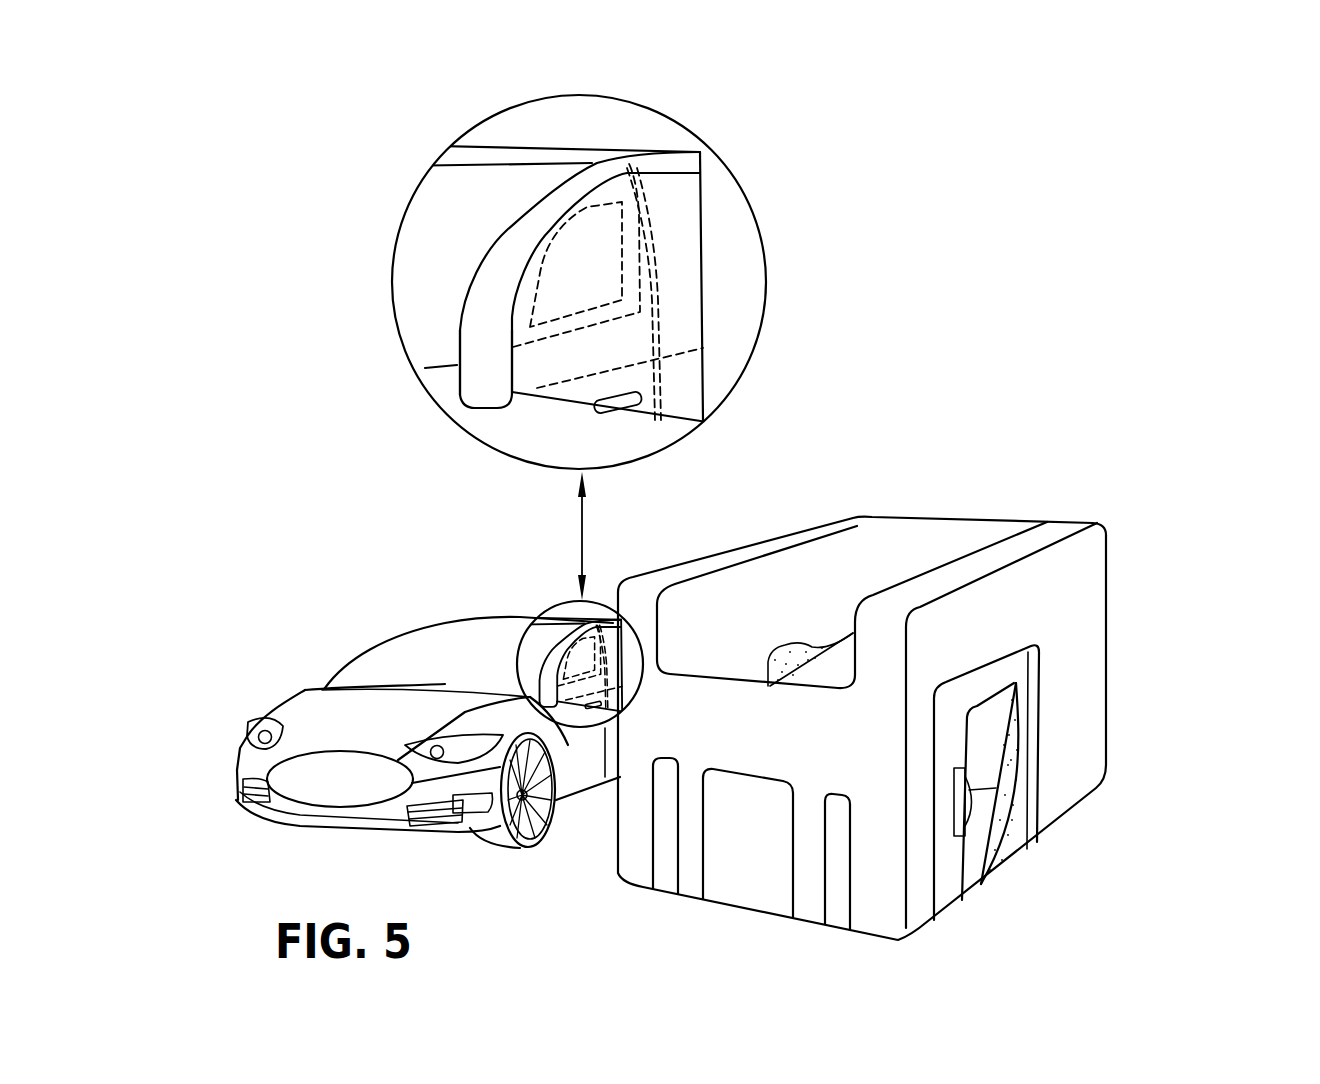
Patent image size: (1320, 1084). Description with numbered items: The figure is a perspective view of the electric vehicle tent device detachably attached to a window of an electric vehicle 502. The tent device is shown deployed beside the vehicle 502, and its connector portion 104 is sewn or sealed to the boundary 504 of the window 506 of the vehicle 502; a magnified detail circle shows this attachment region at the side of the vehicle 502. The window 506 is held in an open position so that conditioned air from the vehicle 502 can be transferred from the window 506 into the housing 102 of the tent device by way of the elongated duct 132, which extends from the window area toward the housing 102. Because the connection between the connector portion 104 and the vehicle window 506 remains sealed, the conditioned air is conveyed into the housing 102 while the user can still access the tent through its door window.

The housing 102 is at (1158, 691).
The connector portion 104 is at (565, 178).
The elongated duct 132 is at (513, 392).
The electric vehicle 502 is at (348, 693).
The boundary 504 is at (540, 262).
The window 506 is at (557, 307).